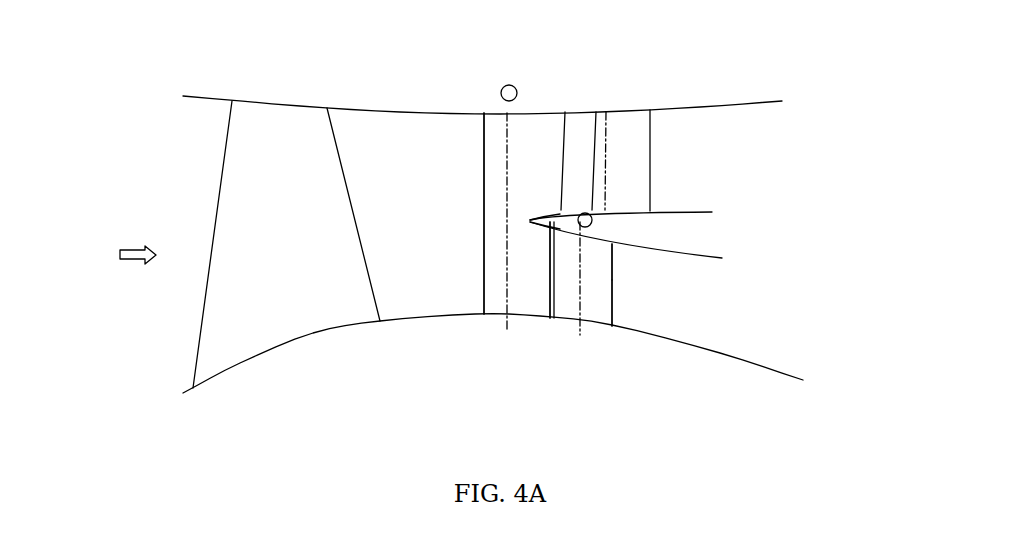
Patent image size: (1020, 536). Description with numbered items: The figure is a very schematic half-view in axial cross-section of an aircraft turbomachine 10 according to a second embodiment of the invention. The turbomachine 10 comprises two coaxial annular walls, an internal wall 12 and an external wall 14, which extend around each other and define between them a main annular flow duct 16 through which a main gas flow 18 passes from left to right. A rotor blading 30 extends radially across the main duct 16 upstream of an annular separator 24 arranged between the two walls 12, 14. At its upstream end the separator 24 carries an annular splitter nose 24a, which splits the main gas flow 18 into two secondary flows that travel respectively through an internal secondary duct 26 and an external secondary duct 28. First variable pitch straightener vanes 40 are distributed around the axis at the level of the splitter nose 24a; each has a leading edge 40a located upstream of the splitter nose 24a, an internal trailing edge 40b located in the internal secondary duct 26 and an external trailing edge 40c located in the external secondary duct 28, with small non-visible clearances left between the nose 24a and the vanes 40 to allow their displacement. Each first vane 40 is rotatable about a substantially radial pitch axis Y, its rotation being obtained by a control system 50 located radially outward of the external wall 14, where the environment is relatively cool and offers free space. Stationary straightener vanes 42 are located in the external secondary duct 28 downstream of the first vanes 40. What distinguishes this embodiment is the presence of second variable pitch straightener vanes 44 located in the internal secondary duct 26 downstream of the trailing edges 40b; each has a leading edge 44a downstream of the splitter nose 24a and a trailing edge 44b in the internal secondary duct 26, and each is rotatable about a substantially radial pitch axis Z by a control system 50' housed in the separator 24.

The turbomachine 10 is at (603, 76).
The internal annular wall 12 is at (407, 321).
The external annular wall 14 is at (391, 113).
The main annular flow duct 16 is at (407, 277).
The main gas flow 18 is at (137, 247).
The annular separator 24 is at (697, 234).
The annular splitter nose 24a is at (533, 216).
The internal secondary duct 26 is at (760, 322).
The external secondary duct 28 is at (770, 134).
The rotor blading 30 is at (247, 342).
The first variable pitch straightener vanes 40 is at (524, 308).
The leading edge 40a is at (478, 255).
The internal trailing edge 40b is at (551, 297).
The external trailing edge 40c is at (567, 135).
The stationary straightener vanes 42 is at (637, 136).
The second variable pitch straightener vanes 44 is at (602, 324).
The leading edge 44a is at (553, 267).
The trailing edge 44b is at (613, 247).
The control system 50 is at (512, 66).
The control system 50' is at (623, 223).
The pitch axis Y is at (504, 152).
The pitch axis Z is at (583, 250).